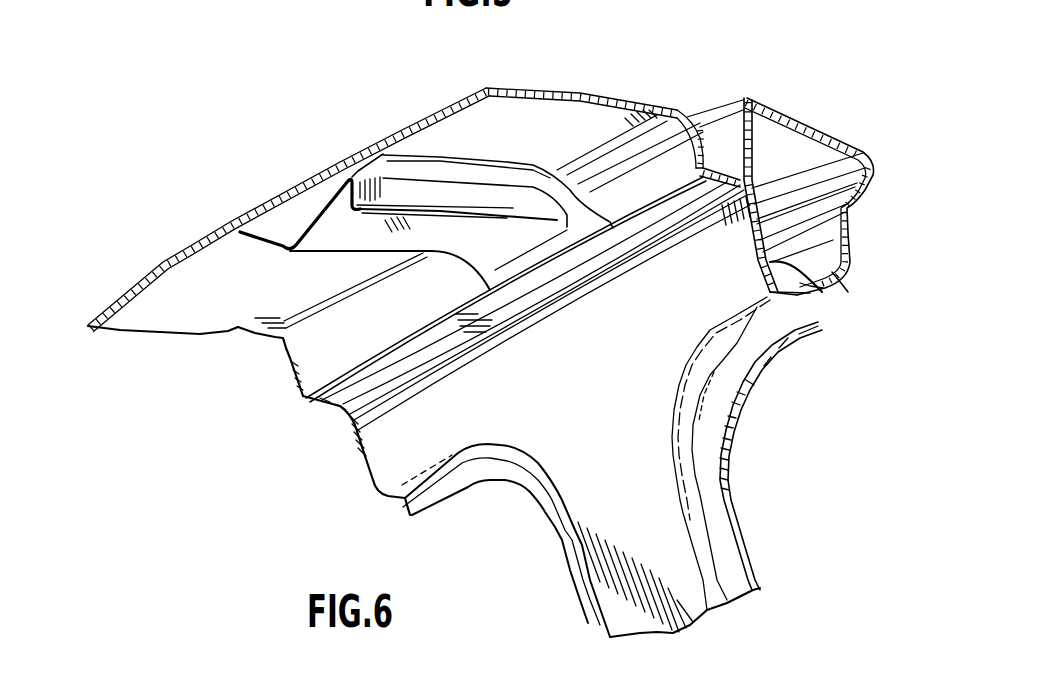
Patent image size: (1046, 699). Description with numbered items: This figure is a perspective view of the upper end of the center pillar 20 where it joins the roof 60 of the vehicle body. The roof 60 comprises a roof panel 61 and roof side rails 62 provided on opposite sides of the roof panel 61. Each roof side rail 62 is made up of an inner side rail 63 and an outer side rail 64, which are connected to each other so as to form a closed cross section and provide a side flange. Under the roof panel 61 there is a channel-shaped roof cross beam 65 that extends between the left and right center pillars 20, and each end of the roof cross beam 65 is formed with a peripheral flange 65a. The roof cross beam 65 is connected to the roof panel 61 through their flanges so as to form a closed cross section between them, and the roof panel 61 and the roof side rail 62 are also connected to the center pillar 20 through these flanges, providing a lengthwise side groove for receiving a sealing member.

The center pillar 20 is at (738, 503).
The roof 60 is at (697, 92).
The roof panel 61 is at (588, 97).
The roof side rail 62 is at (897, 293).
The inner side rail 63 is at (822, 292).
The outer side rail 64 is at (843, 283).
The roof cross beam 65 is at (334, 259).
The peripheral flange 65a is at (578, 230).